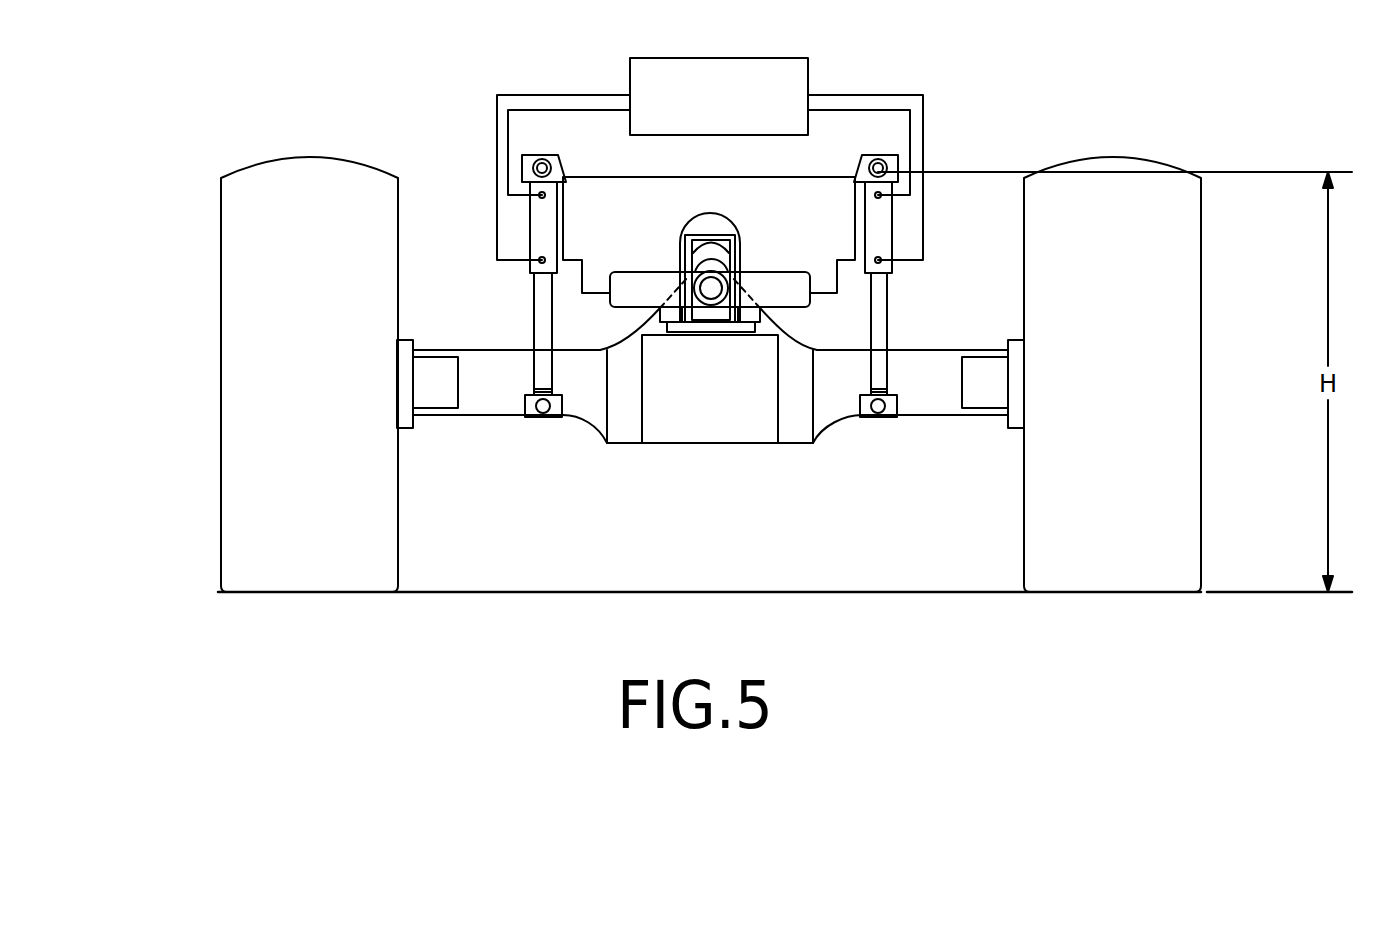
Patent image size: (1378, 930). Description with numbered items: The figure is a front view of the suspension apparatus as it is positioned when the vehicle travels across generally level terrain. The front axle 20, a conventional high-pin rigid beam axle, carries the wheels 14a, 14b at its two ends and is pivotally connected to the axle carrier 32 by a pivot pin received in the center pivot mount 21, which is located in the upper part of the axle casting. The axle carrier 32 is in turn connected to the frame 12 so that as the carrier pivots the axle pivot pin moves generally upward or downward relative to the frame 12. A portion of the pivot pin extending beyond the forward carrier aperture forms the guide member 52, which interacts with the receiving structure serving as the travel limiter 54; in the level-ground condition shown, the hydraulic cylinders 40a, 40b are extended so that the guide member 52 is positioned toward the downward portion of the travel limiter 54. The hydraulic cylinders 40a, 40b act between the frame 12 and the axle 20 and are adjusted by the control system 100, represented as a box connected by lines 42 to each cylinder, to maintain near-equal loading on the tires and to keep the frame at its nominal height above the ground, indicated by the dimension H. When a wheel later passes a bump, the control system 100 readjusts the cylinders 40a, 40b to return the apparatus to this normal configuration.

The frame 12 is at (591, 178).
The wheel 14a is at (1169, 508).
The wheel 14b is at (235, 492).
The front axle 20 is at (934, 407).
The center pivot mount 21 is at (782, 328).
The axle carrier 32 is at (763, 278).
The hydraulic cylinder 40a is at (883, 237).
The hydraulic cylinder 40b is at (537, 235).
The control lines 42 is at (497, 125).
The guide member 52 is at (709, 300).
The travel limiter 54 is at (685, 233).
The control system 100 is at (808, 72).